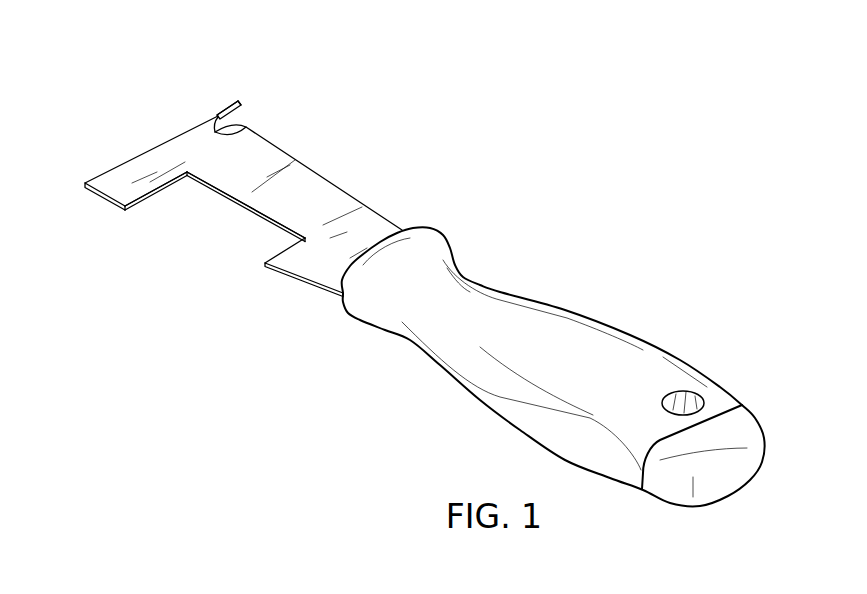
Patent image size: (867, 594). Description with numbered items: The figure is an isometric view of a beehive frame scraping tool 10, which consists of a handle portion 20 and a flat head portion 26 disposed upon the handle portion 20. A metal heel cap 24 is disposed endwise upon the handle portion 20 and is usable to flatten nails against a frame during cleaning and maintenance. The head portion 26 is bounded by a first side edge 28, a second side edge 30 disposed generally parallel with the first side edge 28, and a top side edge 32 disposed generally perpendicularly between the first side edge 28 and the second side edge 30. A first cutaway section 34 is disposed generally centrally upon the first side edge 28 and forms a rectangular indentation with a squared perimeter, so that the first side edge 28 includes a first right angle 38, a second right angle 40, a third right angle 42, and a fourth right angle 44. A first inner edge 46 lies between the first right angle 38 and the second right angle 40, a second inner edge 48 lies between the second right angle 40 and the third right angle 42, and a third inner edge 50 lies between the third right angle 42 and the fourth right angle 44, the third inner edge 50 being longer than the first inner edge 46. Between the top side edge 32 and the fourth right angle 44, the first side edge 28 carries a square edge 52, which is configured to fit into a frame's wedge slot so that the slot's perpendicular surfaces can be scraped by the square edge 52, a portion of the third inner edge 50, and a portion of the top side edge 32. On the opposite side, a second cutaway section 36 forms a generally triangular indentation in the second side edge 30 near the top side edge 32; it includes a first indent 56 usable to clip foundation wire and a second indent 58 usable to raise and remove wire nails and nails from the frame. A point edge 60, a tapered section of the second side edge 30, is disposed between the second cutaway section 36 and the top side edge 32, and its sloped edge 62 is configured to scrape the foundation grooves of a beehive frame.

The beehive frame scraping tool 10 is at (110, 48).
The handle portion 20 is at (570, 333).
The metal heel cap 24 is at (727, 473).
The head portion 26 is at (333, 262).
The first side edge 28 is at (45, 235).
The second side edge 30 is at (293, 55).
The top side edge 32 is at (47, 150).
The first cutaway section 34 is at (200, 263).
The second cutaway section 36 is at (252, 117).
The first right angle 38 is at (266, 266).
The second right angle 40 is at (300, 238).
The third right angle 42 is at (188, 177).
The fourth right angle 44 is at (124, 212).
The first inner edge 46 is at (277, 252).
The second inner edge 48 is at (243, 207).
The third inner edge 50 is at (160, 192).
The square edge 52 is at (103, 200).
The first indent 56 is at (217, 115).
The second indent 58 is at (255, 129).
The point edge 60 is at (237, 101).
The sloped edge 62 is at (242, 102).